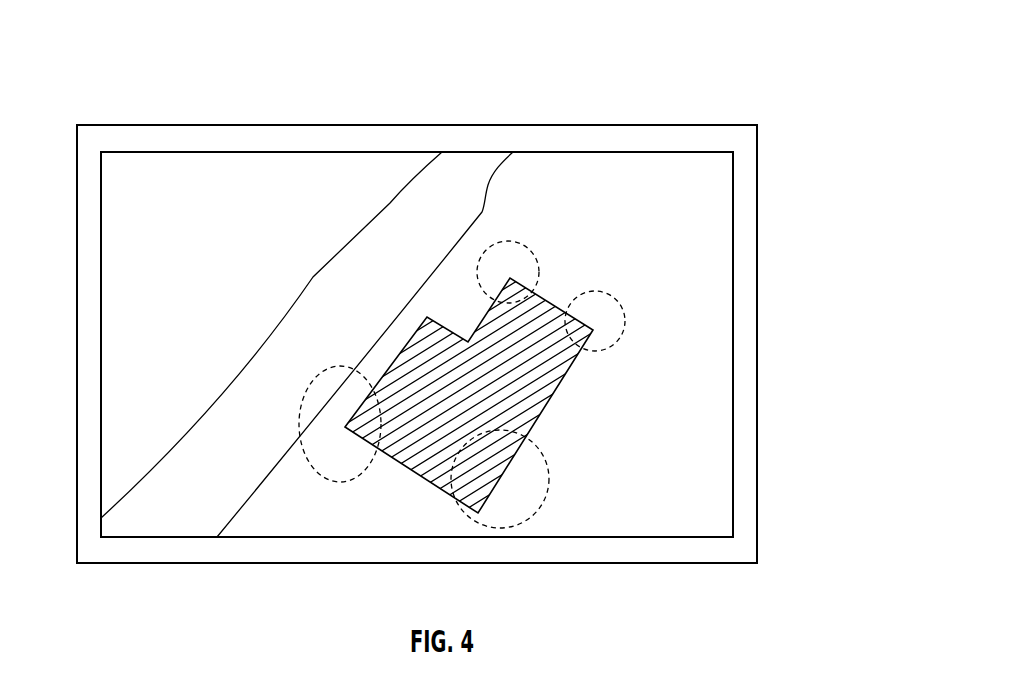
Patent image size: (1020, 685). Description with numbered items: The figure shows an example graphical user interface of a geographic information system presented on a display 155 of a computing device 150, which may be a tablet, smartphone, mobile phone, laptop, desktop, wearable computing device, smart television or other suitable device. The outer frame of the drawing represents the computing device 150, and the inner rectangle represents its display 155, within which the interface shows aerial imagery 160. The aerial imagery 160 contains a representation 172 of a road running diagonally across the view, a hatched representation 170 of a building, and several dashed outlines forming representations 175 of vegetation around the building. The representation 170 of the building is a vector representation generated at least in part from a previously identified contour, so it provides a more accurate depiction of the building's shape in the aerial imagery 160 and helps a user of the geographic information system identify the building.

The computing device 150 is at (757, 178).
The display 155 is at (733, 253).
The aerial imagery 160 is at (672, 166).
The representation of the building 170 is at (527, 356).
The representation of the road 172 is at (330, 285).
The representations of vegetation 175 is at (504, 255).